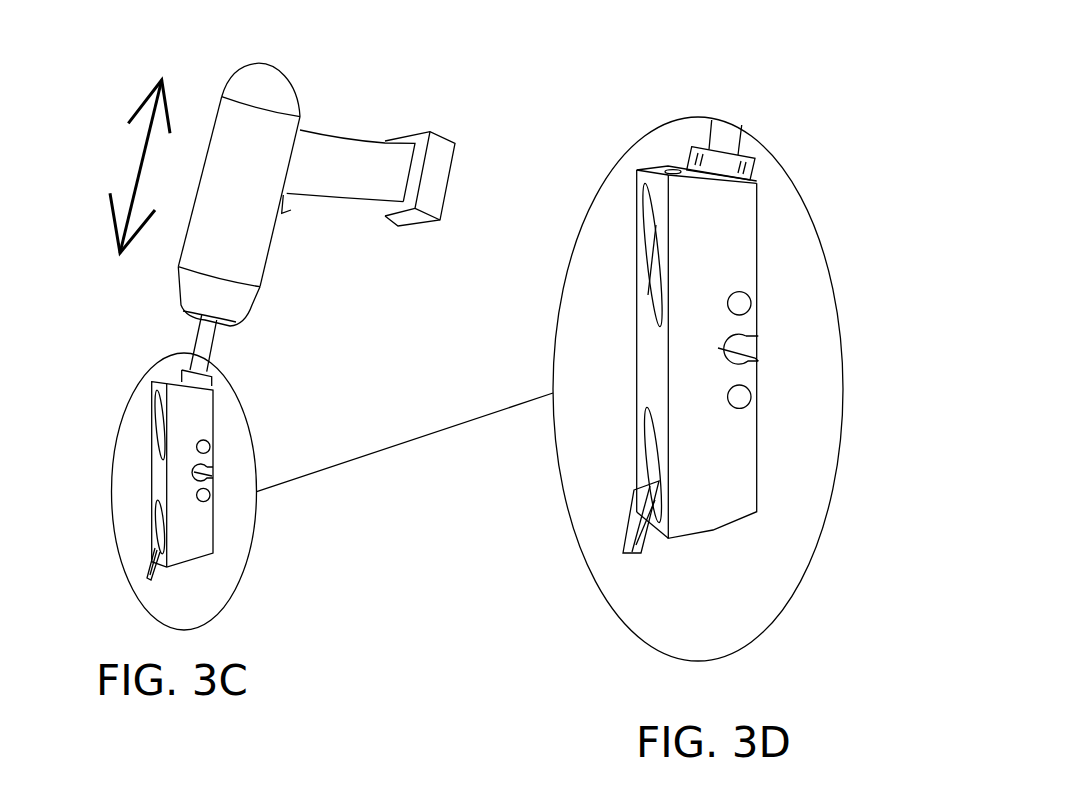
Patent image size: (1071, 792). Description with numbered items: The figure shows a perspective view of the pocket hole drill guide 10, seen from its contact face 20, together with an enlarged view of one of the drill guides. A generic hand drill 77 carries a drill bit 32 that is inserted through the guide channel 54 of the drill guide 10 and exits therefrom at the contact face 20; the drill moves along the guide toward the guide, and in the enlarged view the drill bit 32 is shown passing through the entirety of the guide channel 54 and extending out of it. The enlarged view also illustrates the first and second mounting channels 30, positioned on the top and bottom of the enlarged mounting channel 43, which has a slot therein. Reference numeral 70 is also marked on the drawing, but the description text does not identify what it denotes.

In FIG. 3C, the pocket hole drill guide 10 is at (145, 493).
In FIG. 3D, the pocket hole drill guide 10 is at (647, 187).
In FIG. 3D, the contact face 20 is at (633, 270).
In FIG. 3D, the first and second mounting channels 30 is at (762, 278).
In FIG. 3C, the drill bit 32 is at (133, 538).
In FIG. 3D, the drill bit 32 is at (605, 507).
In FIG. 3D, the enlarged mounting channel 43 is at (750, 358).
In FIG. 3C, the guide channel 54 is at (207, 372).
In FIG. 3D, the guide channel 54 is at (690, 142).
In FIG. 3C, the drill 70 is at (394, 113).
In FIG. 3C, the hand drill 77 is at (277, 87).